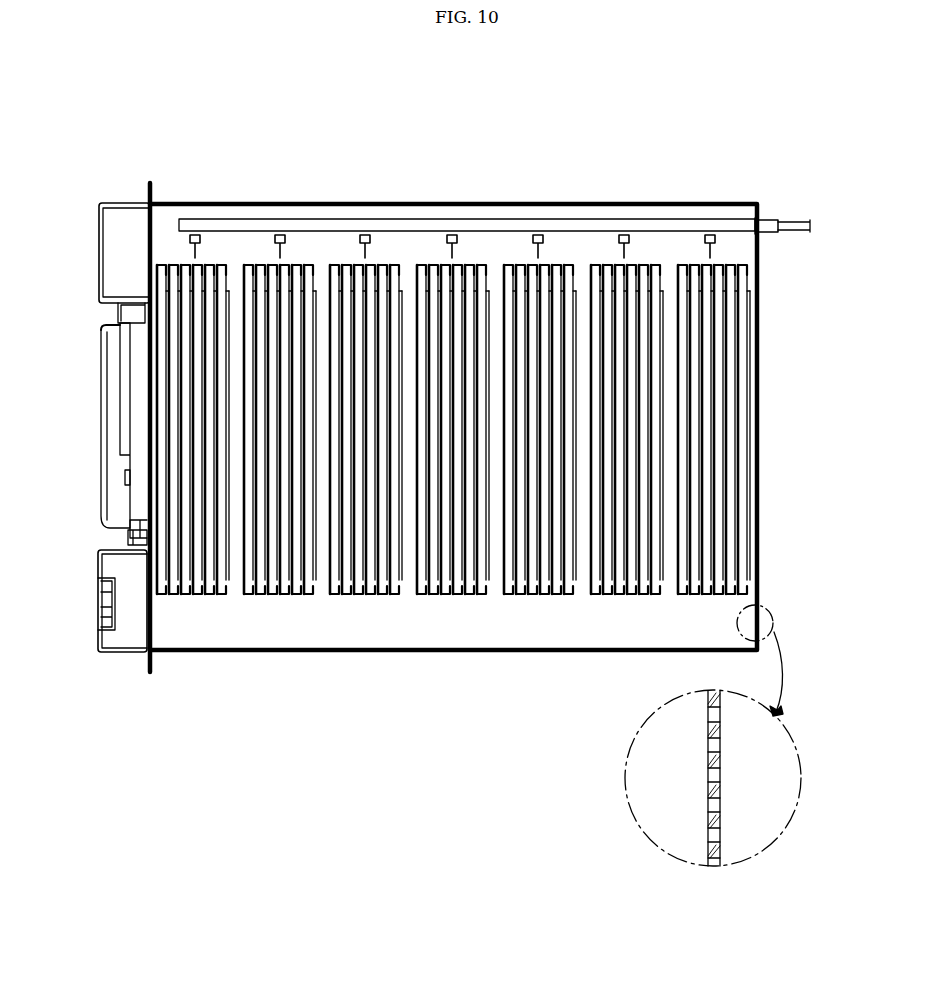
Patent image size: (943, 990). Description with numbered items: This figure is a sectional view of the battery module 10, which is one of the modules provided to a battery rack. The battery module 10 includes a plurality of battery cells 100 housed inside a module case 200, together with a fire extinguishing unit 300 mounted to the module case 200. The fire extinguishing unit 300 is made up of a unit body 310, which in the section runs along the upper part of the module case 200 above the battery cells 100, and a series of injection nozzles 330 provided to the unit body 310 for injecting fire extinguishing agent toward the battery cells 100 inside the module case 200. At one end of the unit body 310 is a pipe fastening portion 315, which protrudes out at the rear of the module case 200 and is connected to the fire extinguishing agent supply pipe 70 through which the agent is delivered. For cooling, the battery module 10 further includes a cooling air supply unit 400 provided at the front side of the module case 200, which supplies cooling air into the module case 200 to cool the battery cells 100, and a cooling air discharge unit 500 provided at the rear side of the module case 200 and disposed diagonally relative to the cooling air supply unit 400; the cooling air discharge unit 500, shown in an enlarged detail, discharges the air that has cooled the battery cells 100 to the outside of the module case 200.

The battery module 10 is at (211, 128).
The fire extinguishing agent supply pipe 70 is at (797, 222).
The battery cell 100 is at (178, 318).
The module case 200 is at (645, 203).
The fire extinguishing unit 300 is at (255, 219).
The unit body 310 is at (408, 227).
The pipe fastening portion 315 is at (766, 220).
The injection nozzle 330 is at (462, 243).
The cooling air supply unit 400 is at (123, 203).
The cooling air discharge unit 500 is at (722, 770).